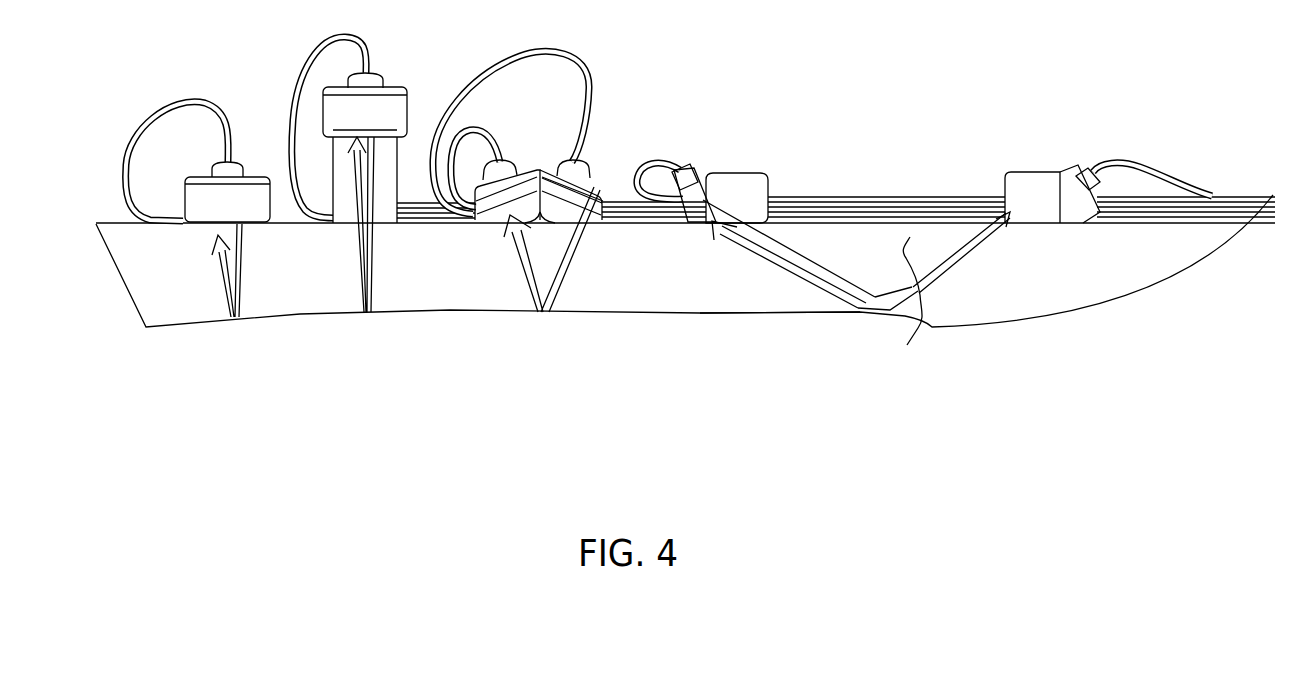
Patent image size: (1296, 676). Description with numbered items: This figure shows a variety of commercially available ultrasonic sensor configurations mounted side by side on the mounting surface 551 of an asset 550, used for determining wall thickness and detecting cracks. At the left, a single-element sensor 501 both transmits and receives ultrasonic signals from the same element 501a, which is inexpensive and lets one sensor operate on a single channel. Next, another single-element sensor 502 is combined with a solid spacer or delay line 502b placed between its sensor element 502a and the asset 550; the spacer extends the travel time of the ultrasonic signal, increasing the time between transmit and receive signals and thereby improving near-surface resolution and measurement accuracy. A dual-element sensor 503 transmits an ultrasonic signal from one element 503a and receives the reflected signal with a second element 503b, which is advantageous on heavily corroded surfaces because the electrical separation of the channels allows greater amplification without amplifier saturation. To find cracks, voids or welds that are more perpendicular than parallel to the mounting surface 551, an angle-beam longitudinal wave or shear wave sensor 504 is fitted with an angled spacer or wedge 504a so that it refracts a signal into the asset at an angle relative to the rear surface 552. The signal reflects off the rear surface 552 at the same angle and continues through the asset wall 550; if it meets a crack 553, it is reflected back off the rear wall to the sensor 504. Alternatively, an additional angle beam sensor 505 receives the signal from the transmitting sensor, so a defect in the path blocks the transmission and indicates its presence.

The single-element sensor 501 is at (247, 177).
The element 501a is at (212, 217).
The single-element sensor 502 is at (387, 85).
The sensor element 502a is at (393, 130).
The solid spacer (delay line) 502b is at (400, 157).
The dual-element sensor 503 is at (590, 153).
The element 503a is at (593, 193).
The second element 503b is at (505, 185).
The angle-beam sensor 504 is at (746, 180).
The angled spacer (wedge) 504a is at (760, 180).
The additional angle beam sensor 505 is at (1020, 178).
The asset 550 is at (447, 313).
The mounting surface 551 is at (853, 223).
The rear surface 552 is at (823, 316).
The crack 553 is at (907, 307).